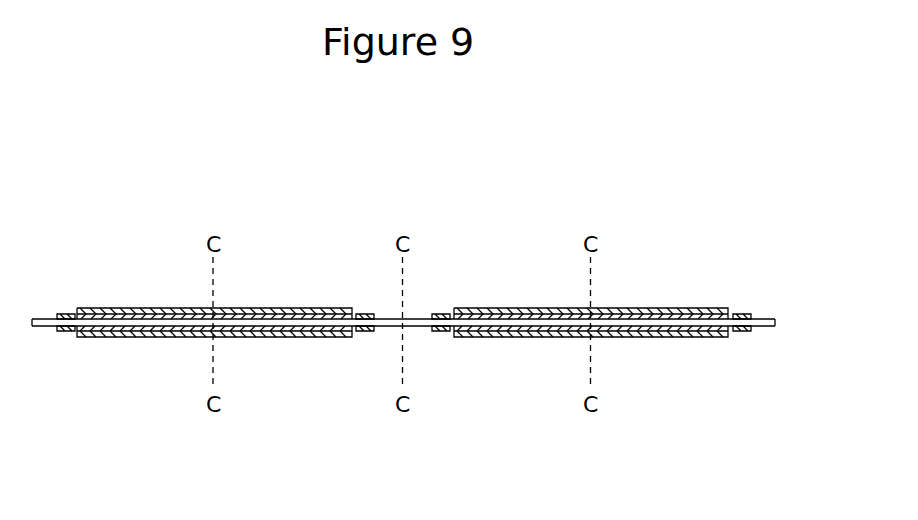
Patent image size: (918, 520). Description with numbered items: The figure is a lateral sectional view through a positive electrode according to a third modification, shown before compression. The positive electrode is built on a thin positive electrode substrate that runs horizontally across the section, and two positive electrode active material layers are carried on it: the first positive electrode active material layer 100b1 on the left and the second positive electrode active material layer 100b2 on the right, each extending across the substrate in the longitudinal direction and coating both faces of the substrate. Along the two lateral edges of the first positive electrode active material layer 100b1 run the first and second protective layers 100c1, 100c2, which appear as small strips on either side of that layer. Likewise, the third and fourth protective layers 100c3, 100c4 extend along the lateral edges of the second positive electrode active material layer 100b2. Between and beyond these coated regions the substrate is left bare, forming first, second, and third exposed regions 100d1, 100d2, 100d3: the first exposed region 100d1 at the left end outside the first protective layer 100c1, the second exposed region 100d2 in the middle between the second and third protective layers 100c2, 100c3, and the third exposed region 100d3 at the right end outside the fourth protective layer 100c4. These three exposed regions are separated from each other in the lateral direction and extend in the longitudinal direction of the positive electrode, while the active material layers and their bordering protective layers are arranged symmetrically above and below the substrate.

The first exposed region 100d1 is at (45, 318).
The second exposed region 100d2 is at (413, 318).
The third exposed region 100d3 is at (763, 327).
The first positive electrode active material layer 100b1 is at (266, 308).
The second positive electrode active material layer 100b2 is at (641, 309).
The first protective layer 100c1 is at (70, 313).
The second protective layer 100c2 is at (360, 313).
The third protective layer 100c3 is at (441, 313).
The fourth protective layer 100c4 is at (737, 313).